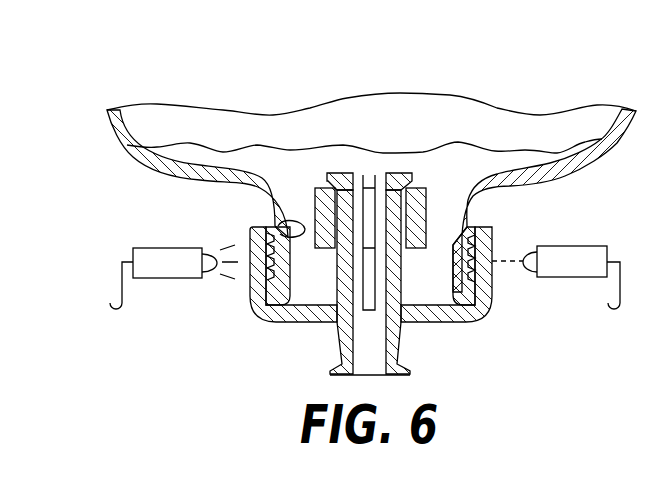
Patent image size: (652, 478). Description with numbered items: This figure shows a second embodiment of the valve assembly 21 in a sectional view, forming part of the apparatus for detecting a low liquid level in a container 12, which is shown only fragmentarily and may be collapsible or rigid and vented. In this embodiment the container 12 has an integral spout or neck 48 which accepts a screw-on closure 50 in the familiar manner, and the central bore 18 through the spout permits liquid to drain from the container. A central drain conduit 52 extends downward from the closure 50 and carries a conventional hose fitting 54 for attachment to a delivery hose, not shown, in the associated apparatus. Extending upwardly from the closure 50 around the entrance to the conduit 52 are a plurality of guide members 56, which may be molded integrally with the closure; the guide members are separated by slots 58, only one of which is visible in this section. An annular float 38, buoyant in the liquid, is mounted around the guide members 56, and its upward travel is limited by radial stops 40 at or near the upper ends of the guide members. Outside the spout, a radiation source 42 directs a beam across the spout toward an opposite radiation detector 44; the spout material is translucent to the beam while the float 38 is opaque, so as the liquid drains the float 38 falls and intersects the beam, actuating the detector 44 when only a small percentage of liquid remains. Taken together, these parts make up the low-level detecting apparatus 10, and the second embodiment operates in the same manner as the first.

The fluid dispensing assembly 10 is at (198, 366).
The container 12 is at (113, 138).
The central bore 18 is at (292, 221).
The valve assembly 21 is at (233, 305).
The annular float 38 is at (318, 189).
The radial stop 40 is at (413, 176).
The radiation source 42 is at (168, 248).
The radiation detector 44 is at (576, 246).
The integral spout or neck 48 is at (470, 228).
The screw-on closure 50 is at (497, 306).
The central drain conduit 52 is at (336, 346).
The hose fitting 54 is at (410, 376).
The guide members 56 is at (394, 173).
The slots 58 is at (369, 311).